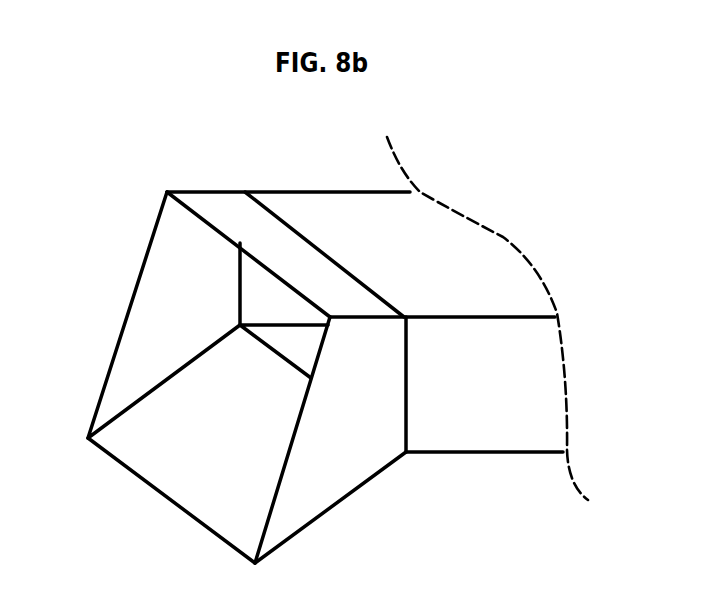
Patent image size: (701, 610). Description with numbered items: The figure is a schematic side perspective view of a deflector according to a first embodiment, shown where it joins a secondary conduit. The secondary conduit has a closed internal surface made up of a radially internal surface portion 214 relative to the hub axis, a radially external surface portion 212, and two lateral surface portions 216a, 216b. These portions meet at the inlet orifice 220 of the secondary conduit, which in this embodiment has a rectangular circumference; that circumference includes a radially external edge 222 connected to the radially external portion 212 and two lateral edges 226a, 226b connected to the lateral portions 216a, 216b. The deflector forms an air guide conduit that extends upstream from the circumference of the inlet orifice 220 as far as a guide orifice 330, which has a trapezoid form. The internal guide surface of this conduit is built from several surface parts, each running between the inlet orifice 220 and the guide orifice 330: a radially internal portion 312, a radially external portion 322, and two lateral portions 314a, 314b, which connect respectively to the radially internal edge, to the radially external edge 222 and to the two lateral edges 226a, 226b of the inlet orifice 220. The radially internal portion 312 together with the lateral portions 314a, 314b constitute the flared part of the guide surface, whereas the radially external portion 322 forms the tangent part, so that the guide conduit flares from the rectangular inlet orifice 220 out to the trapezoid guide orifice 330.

The radially external surface portion 212 is at (422, 240).
The radially internal surface portion 214 is at (505, 453).
The lateral surface portion 216a is at (508, 388).
The lateral surface portion 216b is at (273, 295).
The inlet orifice 220 is at (273, 350).
The radially external edge 222 is at (333, 260).
The lateral edge 226a is at (408, 390).
The lateral edge 226b is at (237, 277).
The radially internal portion of the guide surface 312 is at (193, 473).
The lateral portion of the guide surface 314a is at (350, 438).
The lateral portion of the guide surface 314b is at (150, 330).
The radially external portion of the guide surface 322 is at (262, 232).
The guide orifice 330 is at (188, 515).